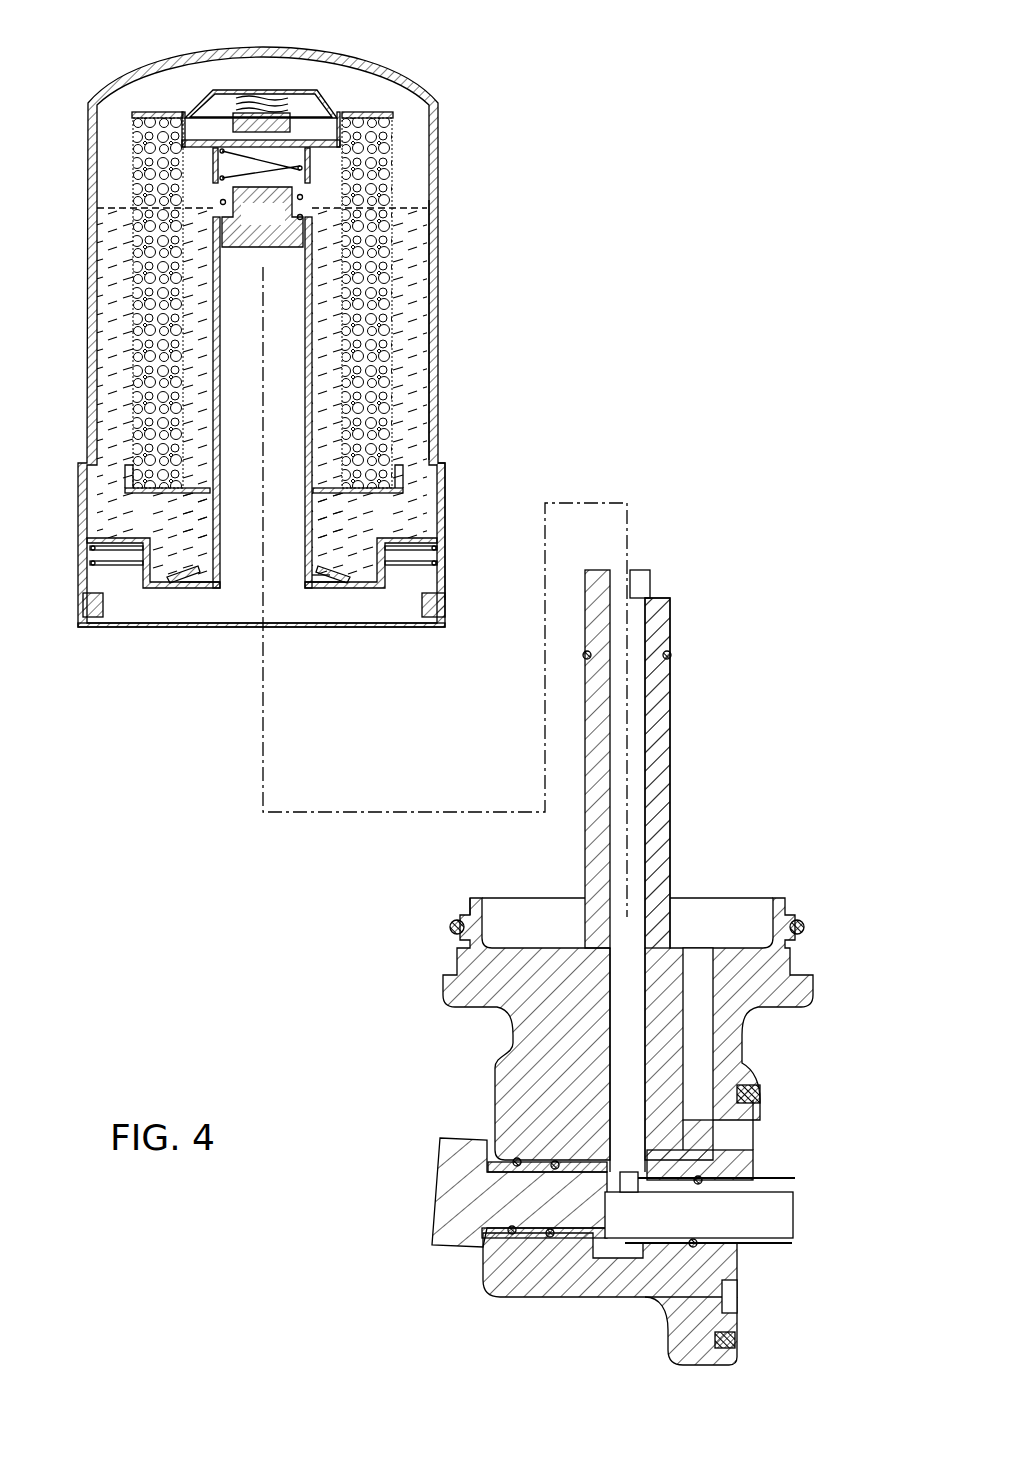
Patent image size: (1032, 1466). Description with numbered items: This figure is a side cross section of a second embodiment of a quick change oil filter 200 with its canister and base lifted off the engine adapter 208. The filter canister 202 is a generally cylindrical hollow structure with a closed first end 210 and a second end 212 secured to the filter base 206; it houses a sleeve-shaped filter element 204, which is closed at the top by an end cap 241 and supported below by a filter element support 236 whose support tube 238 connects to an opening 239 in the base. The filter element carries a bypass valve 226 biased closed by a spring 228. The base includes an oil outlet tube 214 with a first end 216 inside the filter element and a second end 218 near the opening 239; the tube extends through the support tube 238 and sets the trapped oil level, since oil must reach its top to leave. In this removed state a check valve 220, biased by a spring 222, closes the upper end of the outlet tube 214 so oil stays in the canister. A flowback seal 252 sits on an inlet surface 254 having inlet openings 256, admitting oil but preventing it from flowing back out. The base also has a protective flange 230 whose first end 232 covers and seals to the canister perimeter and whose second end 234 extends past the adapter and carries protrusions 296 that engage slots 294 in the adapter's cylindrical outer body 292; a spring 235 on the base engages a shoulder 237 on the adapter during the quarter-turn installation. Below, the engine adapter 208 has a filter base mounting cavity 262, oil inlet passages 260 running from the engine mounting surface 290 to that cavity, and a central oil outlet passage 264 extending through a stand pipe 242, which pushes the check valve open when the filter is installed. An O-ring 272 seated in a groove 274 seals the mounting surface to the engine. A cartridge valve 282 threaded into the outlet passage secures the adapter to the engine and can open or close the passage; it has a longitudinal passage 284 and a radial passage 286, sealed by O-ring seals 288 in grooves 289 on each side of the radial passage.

The quick change oil filter 200 is at (517, 278).
The filter canister 202 is at (520, 173).
The filter element 204 is at (370, 366).
The filter base 206 is at (462, 571).
The engine adapter 208 is at (860, 1151).
The first end 210 is at (377, 63).
The second end 212 is at (88, 540).
The oil outlet tube 214 is at (316, 322).
The first end 216 is at (213, 216).
The second end 218 is at (311, 589).
The check valve 220 is at (262, 217).
The spring 222 is at (232, 173).
The bypass valve 226 is at (297, 112).
The spring 228 is at (256, 98).
The protective flange 230 is at (442, 512).
The first end 232 is at (445, 462).
The second end 234 is at (445, 630).
The spring 235 is at (125, 566).
The filter element support 236 is at (158, 497).
The shoulder 237 is at (462, 912).
The support tube 238 is at (322, 498).
The opening 239 is at (229, 589).
The end cap 241 is at (168, 110).
The stand pipe 242 is at (657, 705).
The flowback seal 252 is at (328, 572).
The inlet surface 254 is at (348, 583).
The inlet openings 256 is at (180, 584).
The oil inlet passages 260 is at (703, 1052).
The filter base mounting cavity 262 is at (708, 928).
The oil outlet passage 264 is at (634, 813).
The O-ring 272 is at (761, 1093).
The groove 274 is at (705, 1335).
The cartridge valve 282 is at (433, 1192).
The longitudinal passage 284 is at (615, 1236).
The radial passage 286 is at (618, 1185).
The O-ring seals 288 is at (548, 1173).
The grooves 289 is at (555, 1161).
The engine mounting surface 290 is at (732, 1181).
The cylindrical outer body 292 is at (457, 970).
The slots 294 is at (458, 948).
The protrusions 296 is at (445, 606).